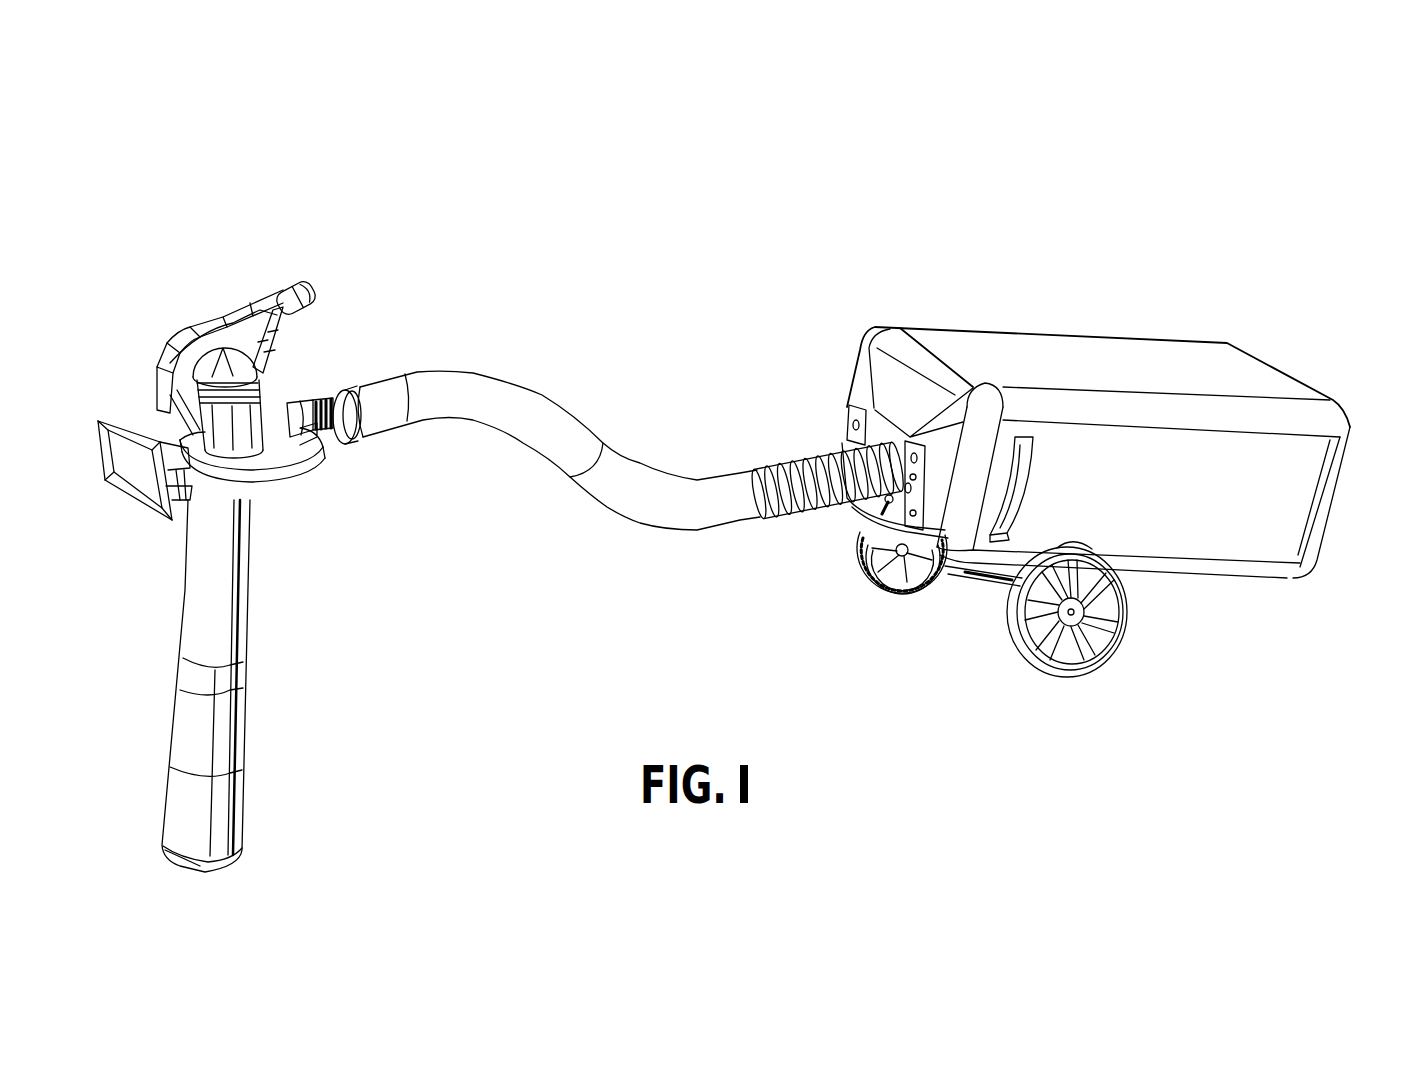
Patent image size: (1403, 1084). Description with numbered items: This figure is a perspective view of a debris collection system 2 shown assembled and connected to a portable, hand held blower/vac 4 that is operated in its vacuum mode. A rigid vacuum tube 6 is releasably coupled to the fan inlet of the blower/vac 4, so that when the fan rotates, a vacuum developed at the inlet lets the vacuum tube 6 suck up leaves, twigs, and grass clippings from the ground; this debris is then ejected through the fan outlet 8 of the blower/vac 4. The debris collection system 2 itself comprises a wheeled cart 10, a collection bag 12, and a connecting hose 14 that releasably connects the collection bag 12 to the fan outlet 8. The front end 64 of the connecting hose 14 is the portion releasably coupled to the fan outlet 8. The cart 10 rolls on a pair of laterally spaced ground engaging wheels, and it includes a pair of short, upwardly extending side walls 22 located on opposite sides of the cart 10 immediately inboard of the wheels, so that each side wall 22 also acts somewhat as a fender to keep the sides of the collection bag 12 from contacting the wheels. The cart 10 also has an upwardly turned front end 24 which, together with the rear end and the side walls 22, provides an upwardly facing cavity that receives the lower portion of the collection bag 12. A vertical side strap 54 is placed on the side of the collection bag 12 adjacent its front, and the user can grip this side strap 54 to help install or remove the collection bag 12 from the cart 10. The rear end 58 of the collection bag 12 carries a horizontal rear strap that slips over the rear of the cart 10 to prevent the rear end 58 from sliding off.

The debris collection system 2 is at (825, 284).
The blower/vac 4 is at (226, 313).
The vacuum tube 6 is at (207, 604).
The fan outlet 8 is at (330, 445).
The wheeled cart 10 is at (986, 608).
The collection bag 12 is at (1048, 326).
The connecting hose 14 is at (612, 462).
The side wall 22 is at (1068, 541).
The front end 24 is at (864, 530).
The side strap 54 is at (1020, 462).
The rear end 58 is at (1330, 478).
The front end 64 is at (348, 395).